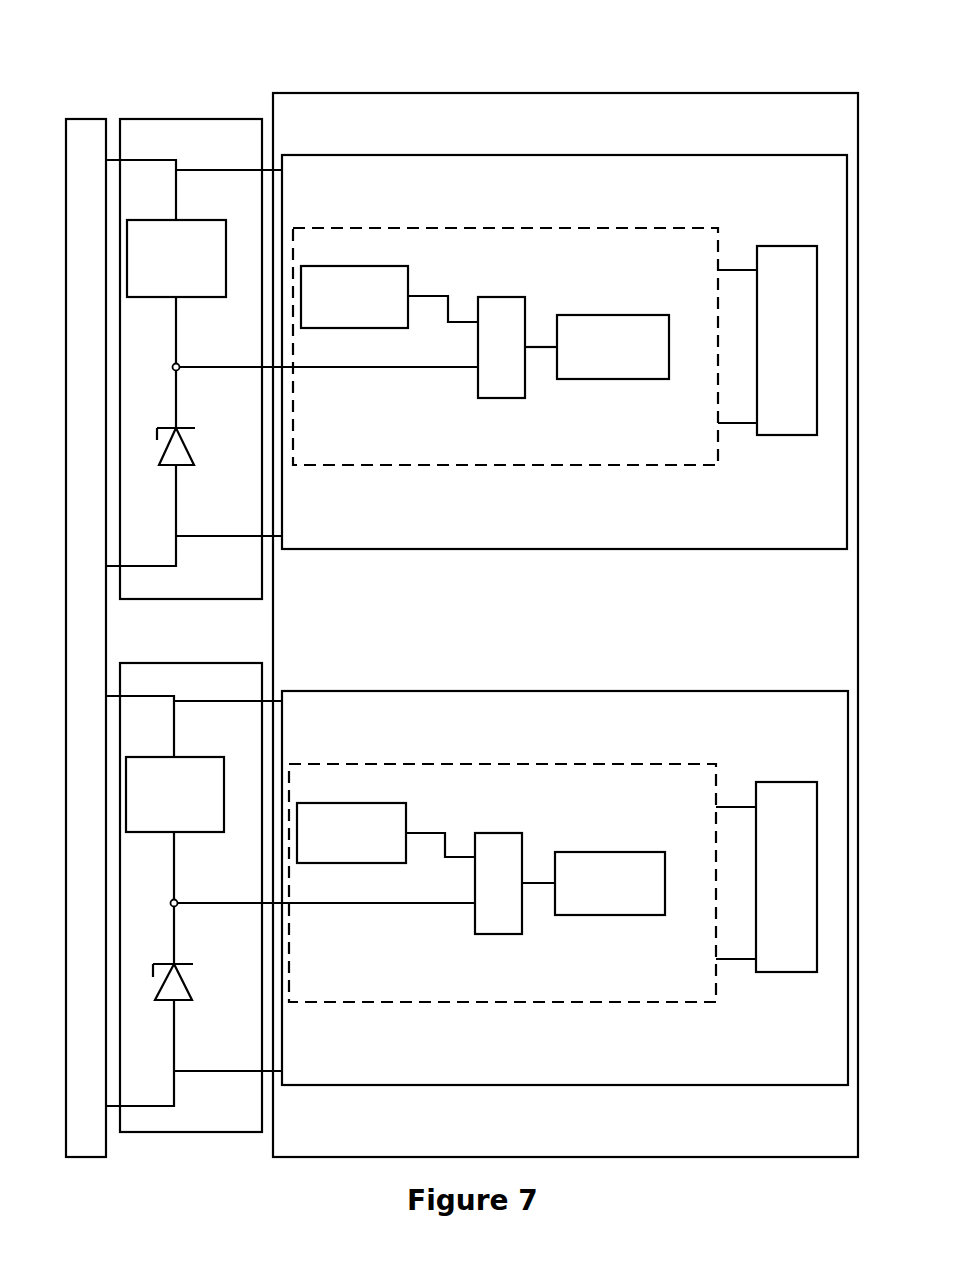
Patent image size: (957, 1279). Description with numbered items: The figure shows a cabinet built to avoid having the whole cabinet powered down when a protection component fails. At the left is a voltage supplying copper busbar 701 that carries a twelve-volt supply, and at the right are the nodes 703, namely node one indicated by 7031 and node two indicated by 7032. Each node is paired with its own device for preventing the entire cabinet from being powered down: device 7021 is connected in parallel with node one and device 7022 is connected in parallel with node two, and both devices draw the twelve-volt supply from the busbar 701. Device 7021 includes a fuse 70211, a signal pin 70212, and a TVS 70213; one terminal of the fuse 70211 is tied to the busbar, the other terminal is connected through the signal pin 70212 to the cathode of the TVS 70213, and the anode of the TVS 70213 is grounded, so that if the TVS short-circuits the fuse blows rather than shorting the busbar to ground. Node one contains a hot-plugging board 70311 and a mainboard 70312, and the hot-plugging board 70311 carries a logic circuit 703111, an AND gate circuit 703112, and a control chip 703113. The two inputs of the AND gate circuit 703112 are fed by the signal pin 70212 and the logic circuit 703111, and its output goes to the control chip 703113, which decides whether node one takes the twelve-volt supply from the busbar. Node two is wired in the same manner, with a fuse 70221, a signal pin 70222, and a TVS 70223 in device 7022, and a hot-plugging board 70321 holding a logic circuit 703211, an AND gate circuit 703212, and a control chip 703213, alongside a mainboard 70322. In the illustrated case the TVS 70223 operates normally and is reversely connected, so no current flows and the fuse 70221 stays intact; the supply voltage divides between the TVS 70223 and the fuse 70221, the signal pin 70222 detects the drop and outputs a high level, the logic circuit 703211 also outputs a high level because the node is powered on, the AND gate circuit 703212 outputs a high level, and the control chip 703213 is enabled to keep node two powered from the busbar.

The voltage supplying copper busbar 701 is at (75, 119).
The nodes 703 is at (806, 93).
The device for preventing an entire cabinet from being powered down 7021 is at (190, 119).
The fuse 70211 is at (176, 220).
The signal pin 70212 is at (179, 363).
The TVS 70213 is at (192, 458).
The node 1 7031 is at (784, 155).
The hot-plugging board 70311 is at (680, 228).
The logic circuit 703111 is at (378, 266).
The AND gate circuit 703112 is at (498, 297).
The control chip 703113 is at (613, 315).
The mainboard 70312 is at (765, 246).
The device for preventing an entire cabinet from being powered down 7022 is at (190, 663).
The fuse 70221 is at (174, 757).
The signal pin 70222 is at (177, 899).
The TVS 70223 is at (192, 994).
The node 2 7032 is at (784, 691).
The hot-plugging board 70321 is at (680, 764).
The logic circuit 703211 is at (377, 803).
The AND gate circuit 703212 is at (497, 833).
The control chip 703213 is at (613, 852).
The mainboard 70322 is at (765, 782).